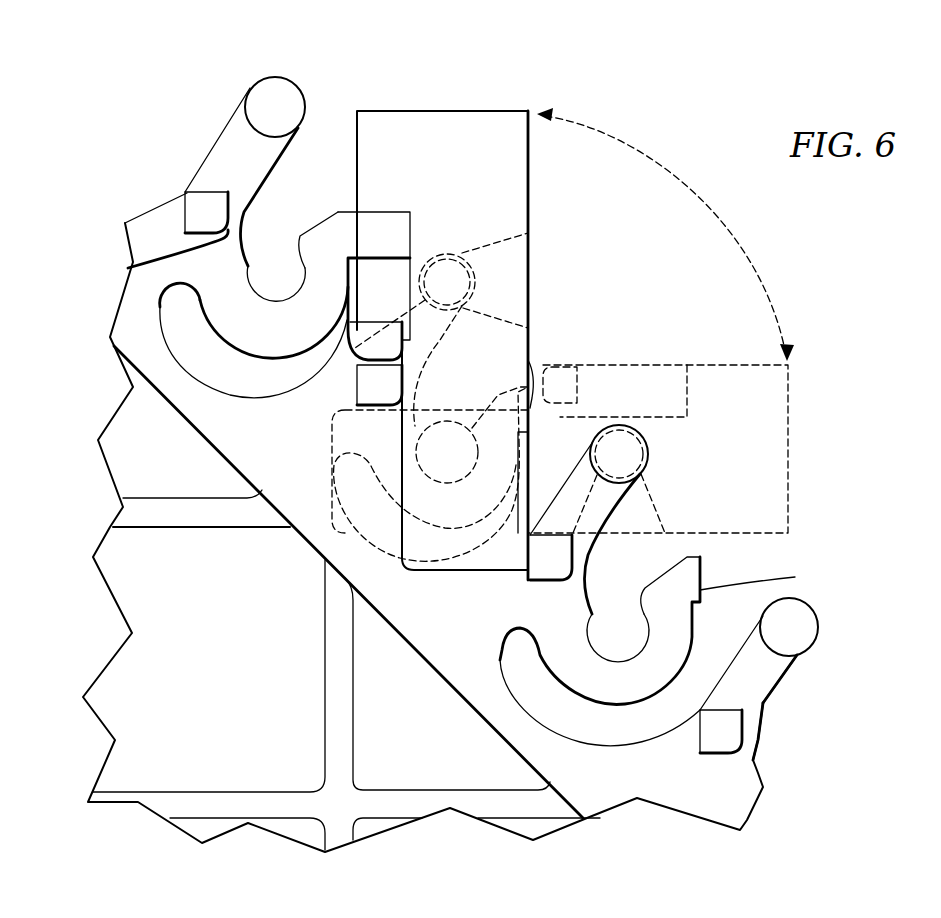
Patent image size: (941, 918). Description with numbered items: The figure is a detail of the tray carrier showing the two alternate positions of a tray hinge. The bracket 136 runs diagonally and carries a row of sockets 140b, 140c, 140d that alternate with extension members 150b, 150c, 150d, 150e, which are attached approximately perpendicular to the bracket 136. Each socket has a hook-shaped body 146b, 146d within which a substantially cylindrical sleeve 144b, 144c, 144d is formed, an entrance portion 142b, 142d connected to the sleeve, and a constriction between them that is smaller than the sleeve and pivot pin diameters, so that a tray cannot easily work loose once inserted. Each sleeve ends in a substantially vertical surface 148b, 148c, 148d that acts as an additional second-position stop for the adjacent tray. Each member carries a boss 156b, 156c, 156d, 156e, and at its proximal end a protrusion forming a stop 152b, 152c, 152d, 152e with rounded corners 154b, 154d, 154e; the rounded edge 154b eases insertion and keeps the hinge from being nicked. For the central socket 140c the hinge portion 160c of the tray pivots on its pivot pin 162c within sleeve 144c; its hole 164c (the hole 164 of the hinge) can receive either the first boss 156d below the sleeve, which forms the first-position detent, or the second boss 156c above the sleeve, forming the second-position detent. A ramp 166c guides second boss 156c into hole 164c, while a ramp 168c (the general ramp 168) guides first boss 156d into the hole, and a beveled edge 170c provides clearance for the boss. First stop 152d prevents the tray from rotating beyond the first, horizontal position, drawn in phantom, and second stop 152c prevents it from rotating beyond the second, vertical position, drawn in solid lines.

The bracket 136 is at (445, 702).
The socket 140b is at (251, 216).
The socket 140c is at (559, 425).
The socket 140d is at (686, 585).
The entrance portion 142b is at (277, 246).
The entrance portion 142d is at (611, 607).
The sleeve 144b is at (276, 294).
The sleeve 144c is at (414, 443).
The sleeve 144d is at (626, 646).
The hook-shaped body 146b is at (348, 215).
The hook-shaped body 146d is at (518, 378).
The vertical surface 148b is at (362, 228).
The vertical surface 148c is at (536, 358).
The vertical surface 148d is at (765, 590).
The extension member 150b is at (221, 134).
The extension member 150c is at (444, 330).
The extension member 150d is at (634, 497).
The extension member 150e is at (788, 693).
The stop 152b is at (188, 213).
The second stop 152c is at (357, 385).
The first stop 152d is at (527, 574).
The stop 152e is at (700, 740).
The rounded corner 154b is at (140, 264).
The rounded corner 154d is at (560, 570).
The rounded corner 154e is at (755, 752).
The boss 156b is at (277, 95).
The second boss 156c is at (438, 251).
The first boss 156d is at (593, 437).
The boss 156e is at (802, 627).
The hinge portion 160c is at (471, 108).
The pivot pin 162c is at (447, 421).
The hole 164 is at (475, 269).
The hole 164c is at (650, 434).
The ramp 166c is at (635, 363).
The ramp 168 is at (514, 256).
The ramp 168c is at (663, 513).
The beveled edge 170c is at (565, 364).